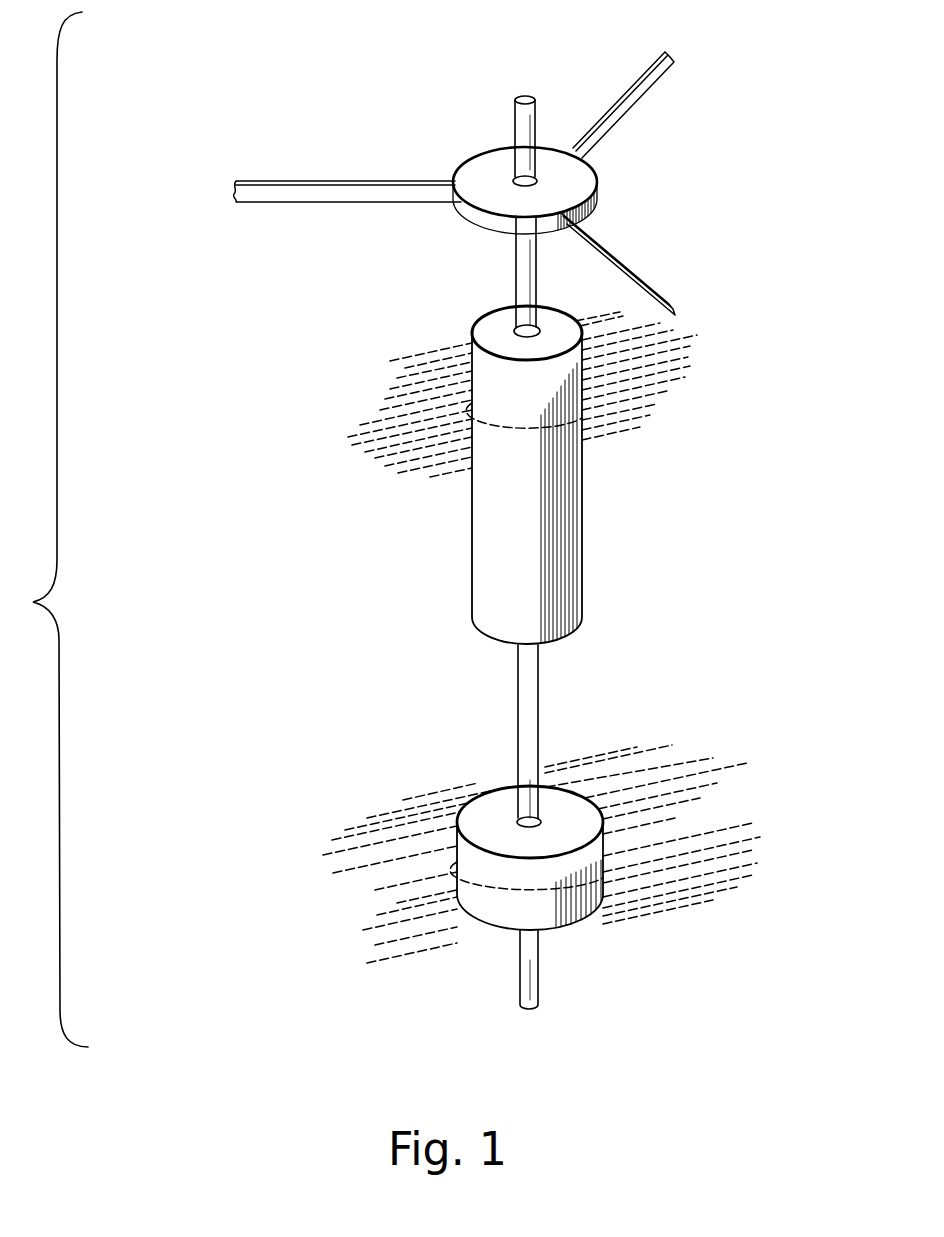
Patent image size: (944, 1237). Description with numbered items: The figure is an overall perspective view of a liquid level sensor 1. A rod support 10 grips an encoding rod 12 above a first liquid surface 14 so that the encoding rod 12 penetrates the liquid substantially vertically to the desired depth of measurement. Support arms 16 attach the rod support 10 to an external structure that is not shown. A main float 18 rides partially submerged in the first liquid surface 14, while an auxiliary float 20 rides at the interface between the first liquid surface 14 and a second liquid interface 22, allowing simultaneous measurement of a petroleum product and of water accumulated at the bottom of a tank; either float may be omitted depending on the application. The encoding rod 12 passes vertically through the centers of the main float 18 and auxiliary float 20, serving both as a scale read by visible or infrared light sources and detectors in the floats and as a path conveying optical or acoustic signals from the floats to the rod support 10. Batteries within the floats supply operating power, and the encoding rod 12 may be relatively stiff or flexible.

The liquid level sensor 1 is at (45, 529).
The rod support 10 is at (600, 187).
The encoding rod 12 is at (516, 268).
The first liquid surface 14 is at (548, 402).
The support arms 16 is at (676, 312).
The main float 18 is at (473, 565).
The auxiliary float 20 is at (600, 903).
The second liquid interface 22 is at (478, 797).